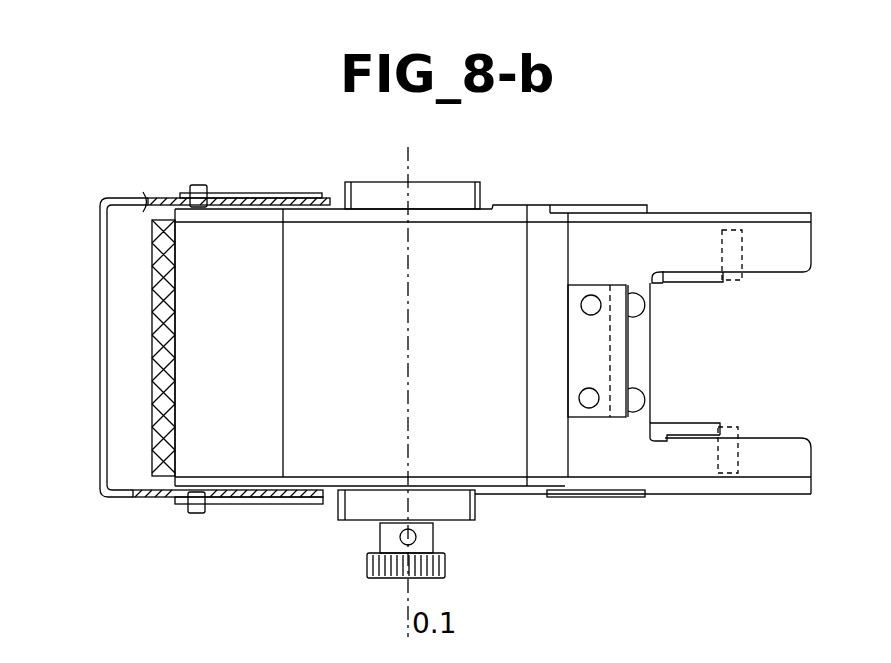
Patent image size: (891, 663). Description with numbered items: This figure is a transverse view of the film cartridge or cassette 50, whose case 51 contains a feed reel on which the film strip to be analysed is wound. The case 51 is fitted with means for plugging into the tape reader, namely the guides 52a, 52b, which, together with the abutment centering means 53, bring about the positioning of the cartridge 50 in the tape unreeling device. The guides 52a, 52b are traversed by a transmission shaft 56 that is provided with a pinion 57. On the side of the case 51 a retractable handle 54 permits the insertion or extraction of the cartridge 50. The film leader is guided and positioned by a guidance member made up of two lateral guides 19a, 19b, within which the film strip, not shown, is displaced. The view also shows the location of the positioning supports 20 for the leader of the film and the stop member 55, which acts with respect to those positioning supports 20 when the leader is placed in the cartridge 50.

The film cartridge 50 is at (314, 141).
The case 51 is at (540, 205).
The guide 52a is at (478, 512).
The guide 52b is at (448, 177).
The abutment centering means 53 is at (686, 280).
The retractable handle 54 is at (140, 490).
The stop member 55 is at (575, 347).
The transmission shaft 56 is at (378, 524).
The pinion 57 is at (435, 565).
The positioning supports 20 is at (636, 282).
The lateral guide 19a is at (787, 463).
The lateral guide 19b is at (790, 250).